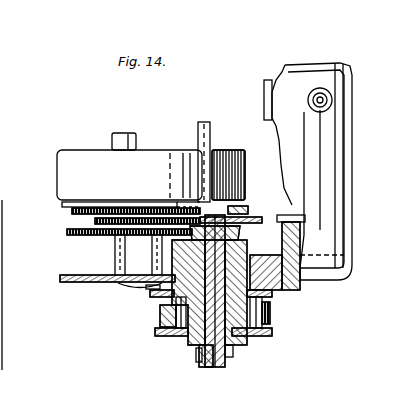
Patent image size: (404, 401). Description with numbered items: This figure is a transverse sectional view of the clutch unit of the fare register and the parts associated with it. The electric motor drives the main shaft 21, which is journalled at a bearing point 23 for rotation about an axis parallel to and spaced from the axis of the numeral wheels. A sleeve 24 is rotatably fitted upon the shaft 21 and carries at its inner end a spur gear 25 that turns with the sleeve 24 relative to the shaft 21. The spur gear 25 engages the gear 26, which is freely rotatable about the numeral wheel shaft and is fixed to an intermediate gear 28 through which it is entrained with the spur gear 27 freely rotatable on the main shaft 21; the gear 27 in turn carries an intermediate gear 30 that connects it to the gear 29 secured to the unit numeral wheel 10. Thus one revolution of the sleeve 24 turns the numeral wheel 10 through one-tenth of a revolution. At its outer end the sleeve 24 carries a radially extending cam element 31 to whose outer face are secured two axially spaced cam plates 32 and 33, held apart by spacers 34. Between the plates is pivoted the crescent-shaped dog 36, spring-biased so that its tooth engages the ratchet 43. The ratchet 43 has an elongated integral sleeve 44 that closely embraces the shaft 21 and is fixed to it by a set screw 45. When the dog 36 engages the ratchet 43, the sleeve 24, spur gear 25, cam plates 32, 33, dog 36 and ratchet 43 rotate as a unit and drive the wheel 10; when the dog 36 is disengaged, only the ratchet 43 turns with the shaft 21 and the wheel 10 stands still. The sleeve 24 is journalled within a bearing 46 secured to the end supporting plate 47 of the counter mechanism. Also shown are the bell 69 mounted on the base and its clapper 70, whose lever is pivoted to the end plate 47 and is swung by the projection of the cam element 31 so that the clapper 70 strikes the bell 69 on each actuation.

The numeral wheel 10 is at (129, 166).
The main shaft 21 is at (203, 130).
The journal 23 is at (268, 296).
The sleeve 24 is at (172, 293).
The spur gear 25 is at (240, 230).
The gear 26 is at (73, 236).
The spur gear 27 is at (258, 218).
The intermediate gear 28 is at (95, 221).
The gear 29 is at (72, 208).
The intermediate gear 30 is at (246, 203).
The cam element 31 is at (165, 300).
The cam plate 32 is at (268, 308).
The cam plate 33 is at (272, 335).
The spacers 34 is at (272, 320).
The dog 36 is at (163, 323).
The ratchet 43 is at (182, 337).
The sleeve 44 is at (234, 356).
The set screw 45 is at (200, 367).
The bearing 46 is at (170, 262).
The end supporting plate 47 is at (62, 278).
The bell 69 is at (276, 92).
The clapper 70 is at (330, 168).